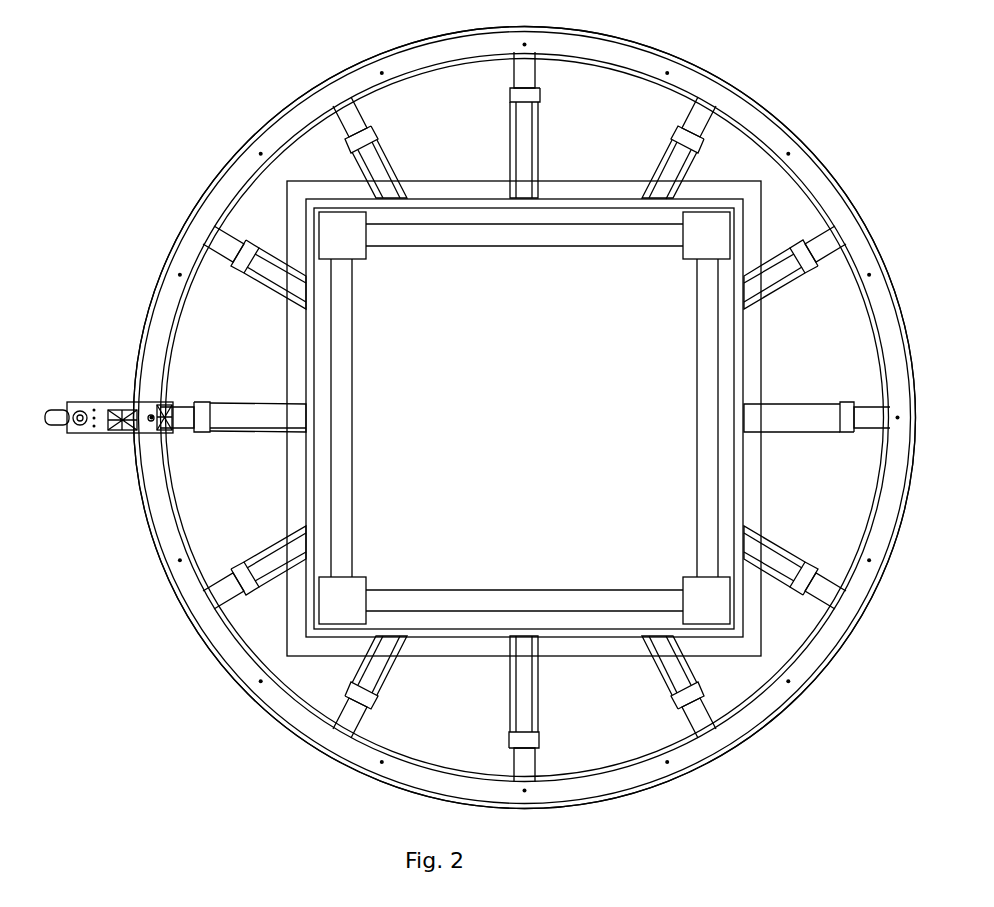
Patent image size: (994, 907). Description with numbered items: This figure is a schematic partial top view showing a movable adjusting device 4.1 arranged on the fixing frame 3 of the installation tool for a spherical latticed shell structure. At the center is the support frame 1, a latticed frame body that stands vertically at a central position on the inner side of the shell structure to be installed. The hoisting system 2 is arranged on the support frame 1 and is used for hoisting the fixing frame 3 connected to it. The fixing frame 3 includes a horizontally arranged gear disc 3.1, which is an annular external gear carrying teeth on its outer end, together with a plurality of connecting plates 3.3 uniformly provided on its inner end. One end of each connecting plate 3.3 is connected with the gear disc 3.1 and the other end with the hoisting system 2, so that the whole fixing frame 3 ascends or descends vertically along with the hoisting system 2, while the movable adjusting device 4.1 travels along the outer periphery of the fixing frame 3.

The support frame 1 is at (523, 588).
The hoisting system 2 is at (317, 455).
The fixing frame 3 is at (213, 178).
The gear disc 3.1 is at (275, 108).
The connecting plates 3.3 is at (508, 68).
The movable adjusting device 4.1 is at (95, 400).